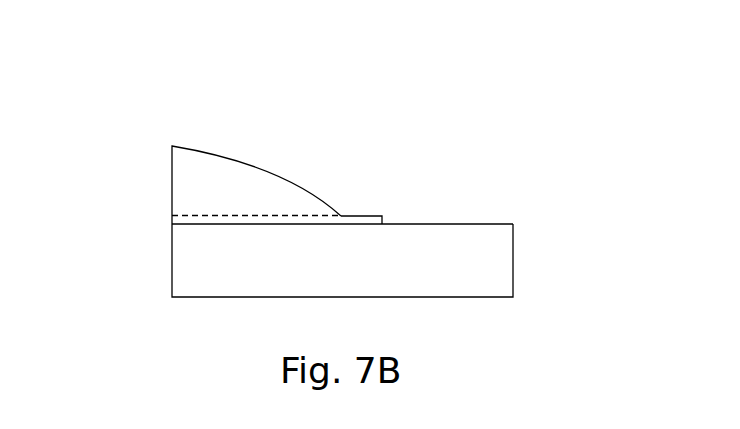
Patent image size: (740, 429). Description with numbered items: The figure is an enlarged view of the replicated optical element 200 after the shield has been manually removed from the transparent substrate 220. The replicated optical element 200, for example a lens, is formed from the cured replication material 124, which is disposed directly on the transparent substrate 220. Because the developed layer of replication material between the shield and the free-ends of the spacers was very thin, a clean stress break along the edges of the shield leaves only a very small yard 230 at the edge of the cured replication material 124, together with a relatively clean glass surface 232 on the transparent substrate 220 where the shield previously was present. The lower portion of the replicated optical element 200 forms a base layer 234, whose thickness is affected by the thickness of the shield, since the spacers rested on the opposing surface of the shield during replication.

The replicated optical element 200 is at (289, 147).
The cured replication material 124 is at (233, 172).
The yard 230 is at (368, 202).
The glass surface 232 is at (465, 217).
The transparent substrate 220 is at (507, 263).
The base layer 234 is at (168, 213).